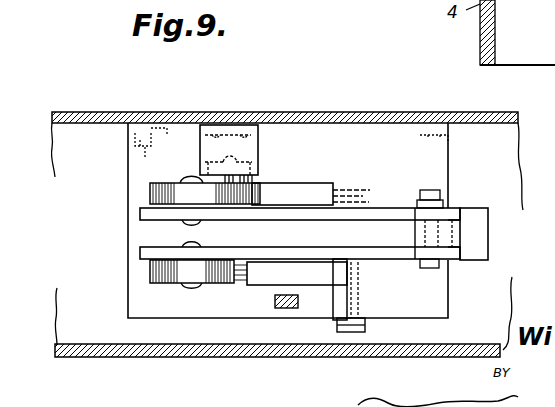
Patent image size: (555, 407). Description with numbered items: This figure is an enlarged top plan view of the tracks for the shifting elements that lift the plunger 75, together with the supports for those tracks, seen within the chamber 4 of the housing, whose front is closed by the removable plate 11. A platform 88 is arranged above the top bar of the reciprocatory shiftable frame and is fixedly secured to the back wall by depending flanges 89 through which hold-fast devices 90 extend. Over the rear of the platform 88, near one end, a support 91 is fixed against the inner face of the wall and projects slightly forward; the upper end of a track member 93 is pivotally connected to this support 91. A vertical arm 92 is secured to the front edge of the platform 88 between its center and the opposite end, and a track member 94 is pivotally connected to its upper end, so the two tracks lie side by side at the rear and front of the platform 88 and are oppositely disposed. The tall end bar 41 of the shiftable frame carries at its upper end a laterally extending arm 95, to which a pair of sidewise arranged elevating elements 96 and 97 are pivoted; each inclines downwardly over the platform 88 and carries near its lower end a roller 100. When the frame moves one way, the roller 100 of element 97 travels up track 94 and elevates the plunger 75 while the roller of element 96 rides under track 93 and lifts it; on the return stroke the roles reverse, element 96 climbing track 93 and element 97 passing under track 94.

The chamber 4 is at (110, 112).
The removable plate 11 is at (188, 348).
The end bar 41 is at (475, 240).
The plunger 75 is at (290, 308).
The platform 88 is at (133, 157).
The depending flanges 89 is at (415, 132).
The hold-fast devices 90 is at (467, 146).
The support 91 is at (247, 143).
The vertical arm 92 is at (365, 323).
The track member 93 is at (312, 191).
The track member 94 is at (257, 273).
The laterally extending arm 95 is at (415, 232).
The elevating element 96 is at (340, 213).
The elevating element 97 is at (258, 243).
The roller 100 is at (150, 191).